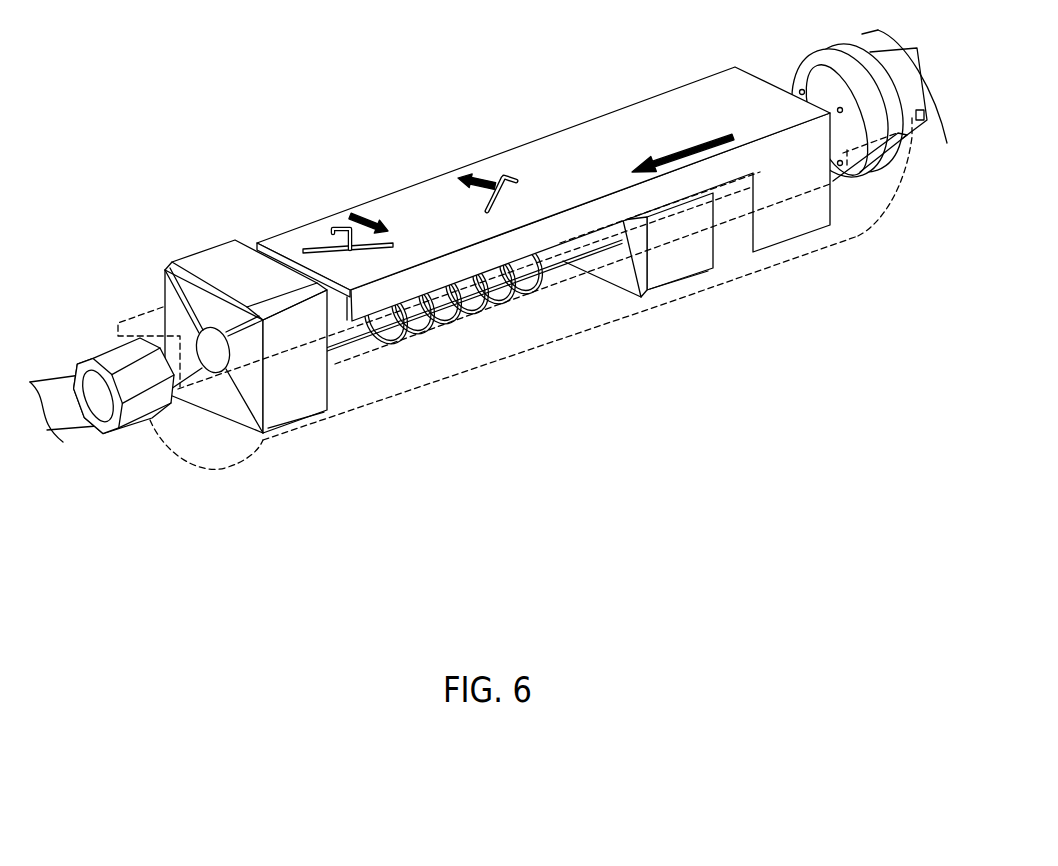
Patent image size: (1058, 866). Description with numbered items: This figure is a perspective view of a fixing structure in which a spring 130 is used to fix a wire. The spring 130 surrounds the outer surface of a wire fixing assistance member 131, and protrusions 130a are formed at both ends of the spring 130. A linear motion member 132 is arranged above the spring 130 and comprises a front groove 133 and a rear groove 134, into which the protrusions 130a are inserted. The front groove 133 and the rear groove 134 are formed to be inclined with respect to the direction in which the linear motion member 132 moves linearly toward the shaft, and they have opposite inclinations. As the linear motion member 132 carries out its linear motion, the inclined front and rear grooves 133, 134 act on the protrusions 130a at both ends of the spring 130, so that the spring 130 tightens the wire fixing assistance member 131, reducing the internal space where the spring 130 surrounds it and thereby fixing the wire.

The spring 130 is at (455, 322).
The protrusions 130a is at (330, 228).
The wire fixing assistance member 131 is at (315, 395).
The linear motion member 132 is at (602, 130).
The front groove 133 is at (397, 213).
The rear groove 134 is at (456, 178).